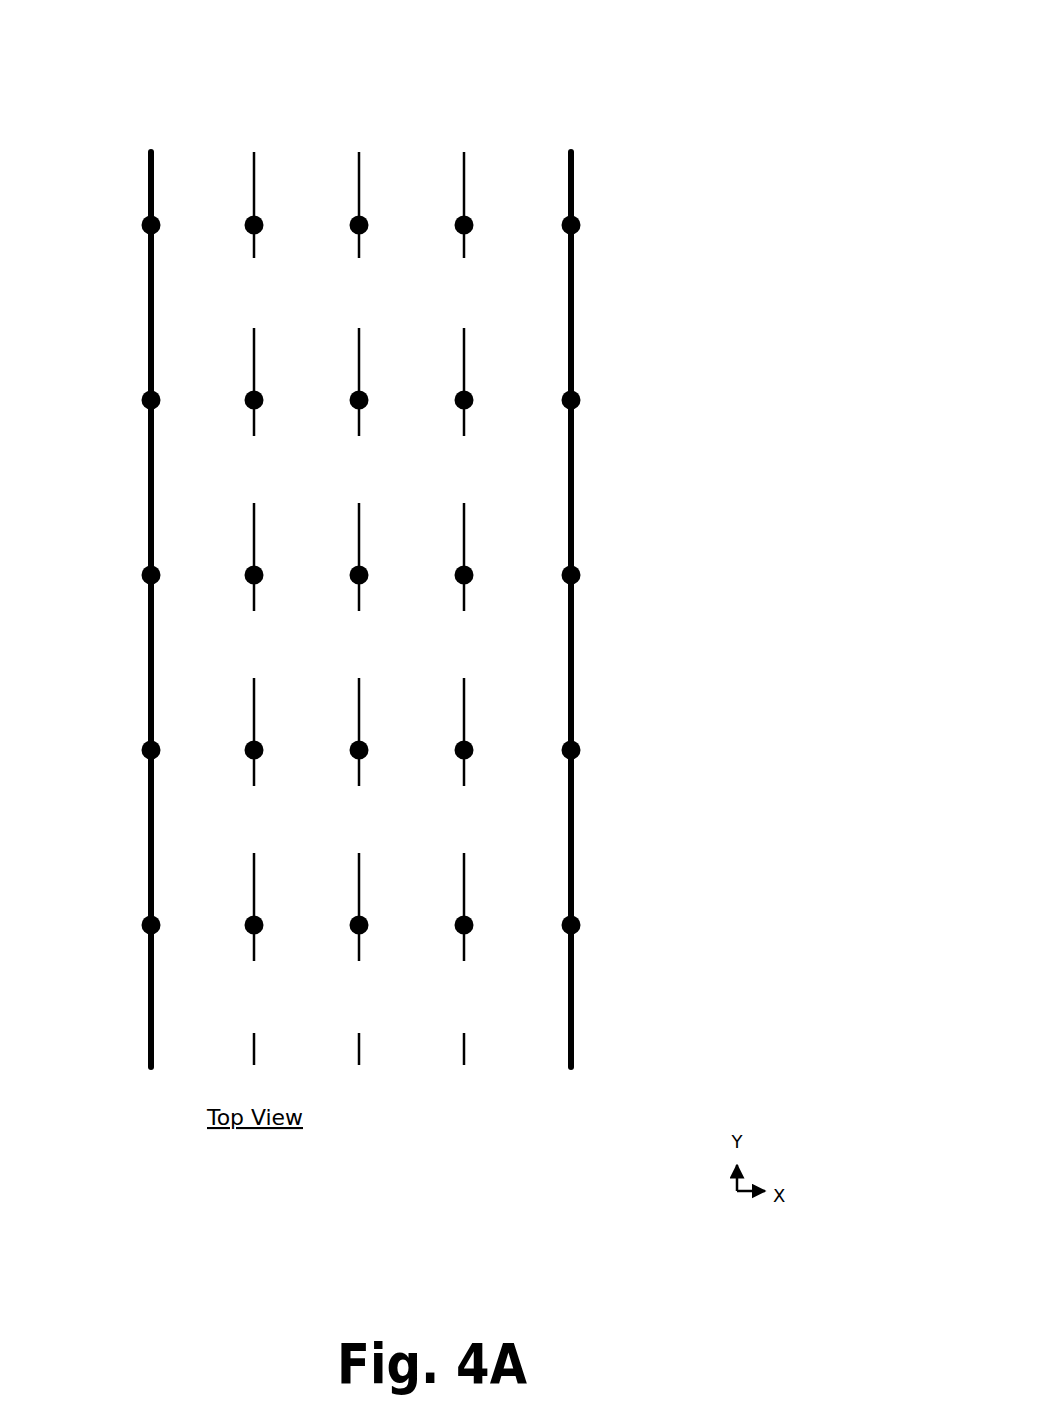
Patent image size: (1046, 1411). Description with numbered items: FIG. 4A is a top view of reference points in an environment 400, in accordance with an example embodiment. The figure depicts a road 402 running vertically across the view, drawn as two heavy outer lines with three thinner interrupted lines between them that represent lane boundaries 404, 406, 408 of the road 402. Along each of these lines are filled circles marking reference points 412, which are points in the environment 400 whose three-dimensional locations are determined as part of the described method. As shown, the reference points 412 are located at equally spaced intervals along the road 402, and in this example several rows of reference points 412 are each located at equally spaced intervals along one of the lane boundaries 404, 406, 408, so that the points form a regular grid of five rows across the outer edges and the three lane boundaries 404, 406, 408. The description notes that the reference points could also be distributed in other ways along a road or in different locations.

The environment 400 is at (722, 132).
The road 402 is at (373, 80).
The lane boundary 404 is at (254, 152).
The lane boundary 406 is at (359, 152).
The lane boundary 408 is at (464, 152).
The reference points 412 is at (460, 400).